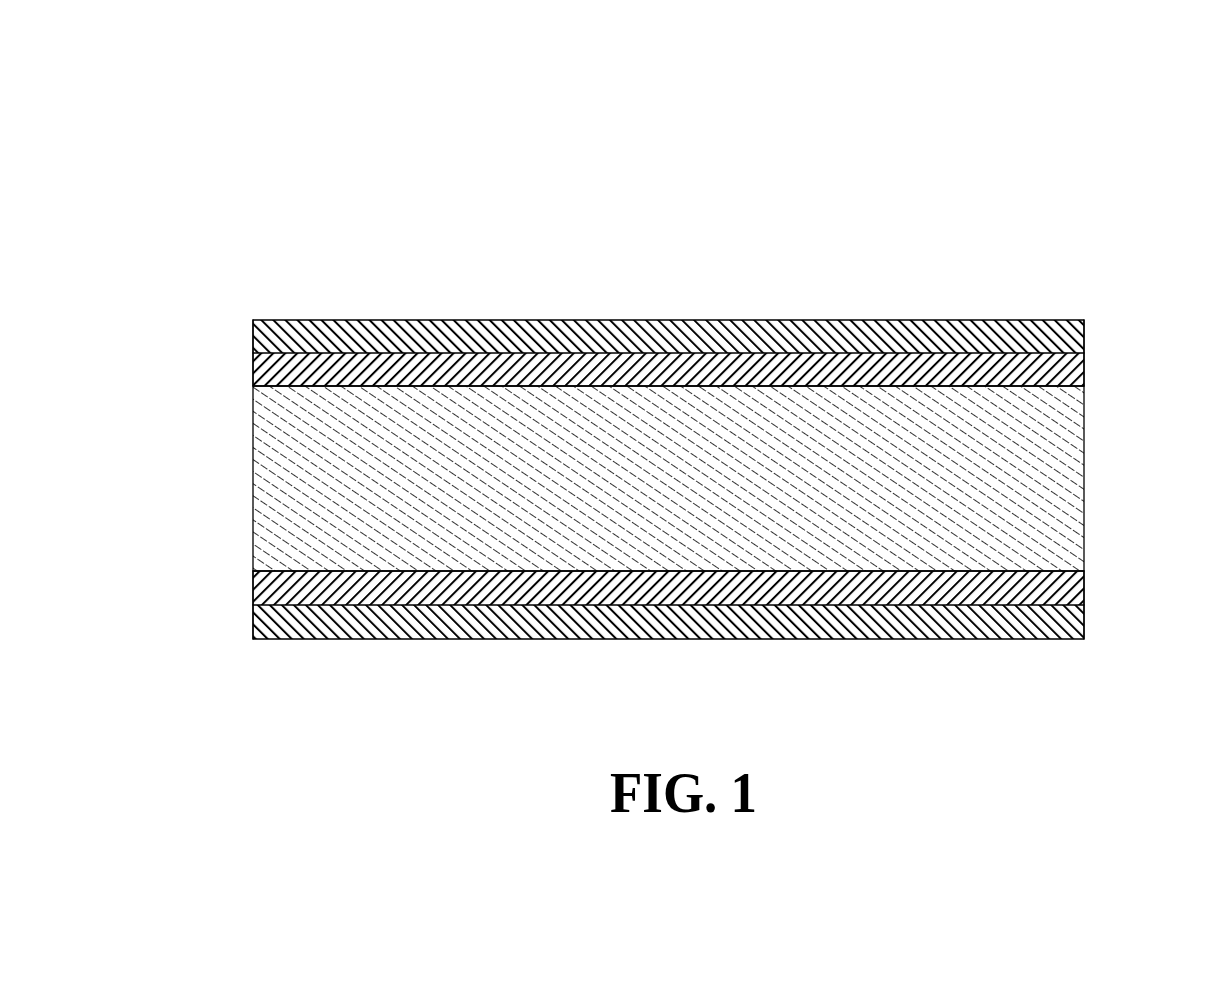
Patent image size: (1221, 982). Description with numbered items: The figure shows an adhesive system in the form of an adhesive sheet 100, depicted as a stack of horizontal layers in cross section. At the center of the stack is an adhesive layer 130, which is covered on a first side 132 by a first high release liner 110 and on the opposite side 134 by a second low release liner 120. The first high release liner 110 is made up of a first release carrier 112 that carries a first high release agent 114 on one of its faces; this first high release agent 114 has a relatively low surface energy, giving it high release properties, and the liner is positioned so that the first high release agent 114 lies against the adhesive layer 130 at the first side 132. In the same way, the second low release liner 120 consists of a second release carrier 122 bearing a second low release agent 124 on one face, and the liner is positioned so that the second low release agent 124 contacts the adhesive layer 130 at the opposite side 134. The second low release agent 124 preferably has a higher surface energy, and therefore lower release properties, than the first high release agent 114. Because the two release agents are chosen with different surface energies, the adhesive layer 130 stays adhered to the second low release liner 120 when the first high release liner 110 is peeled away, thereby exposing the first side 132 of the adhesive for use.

The adhesive sheet 100 is at (623, 117).
The first high release liner 110 is at (1113, 317).
The first release carrier 112 is at (253, 340).
The first high release agent 114 is at (253, 370).
The second low release liner 120 is at (1115, 569).
The second release carrier 122 is at (253, 625).
The second low release agent 124 is at (253, 593).
The adhesive layer 130 is at (1070, 486).
The first side of adhesive layer 132 is at (1018, 390).
The opposite side of adhesive layer 134 is at (1020, 571).